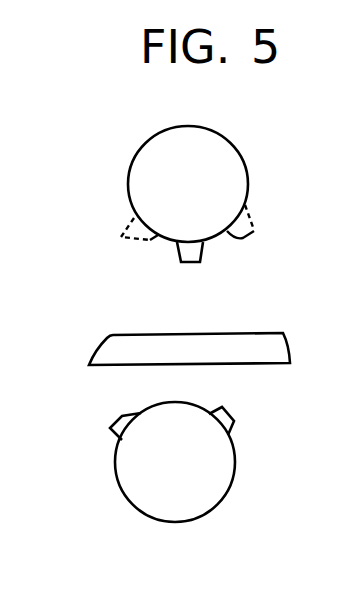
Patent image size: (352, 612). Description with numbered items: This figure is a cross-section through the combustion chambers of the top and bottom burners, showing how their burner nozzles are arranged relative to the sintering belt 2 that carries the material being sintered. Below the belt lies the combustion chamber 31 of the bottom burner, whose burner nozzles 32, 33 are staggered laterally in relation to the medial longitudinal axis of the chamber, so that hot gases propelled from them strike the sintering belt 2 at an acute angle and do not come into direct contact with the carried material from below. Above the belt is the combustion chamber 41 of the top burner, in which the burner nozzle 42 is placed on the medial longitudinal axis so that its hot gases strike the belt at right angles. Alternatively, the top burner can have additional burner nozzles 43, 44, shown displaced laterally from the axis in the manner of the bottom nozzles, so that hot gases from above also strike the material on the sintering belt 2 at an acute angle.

The sintering belt 2 is at (283, 333).
The combustion chamber 31 is at (173, 505).
The burner nozzle 32 is at (110, 430).
The burner nozzle 33 is at (234, 421).
The combustion chamber 41 is at (218, 152).
The burner nozzle 42 is at (193, 262).
The additional burner nozzle 43 is at (123, 240).
The additional burner nozzle 44 is at (254, 231).